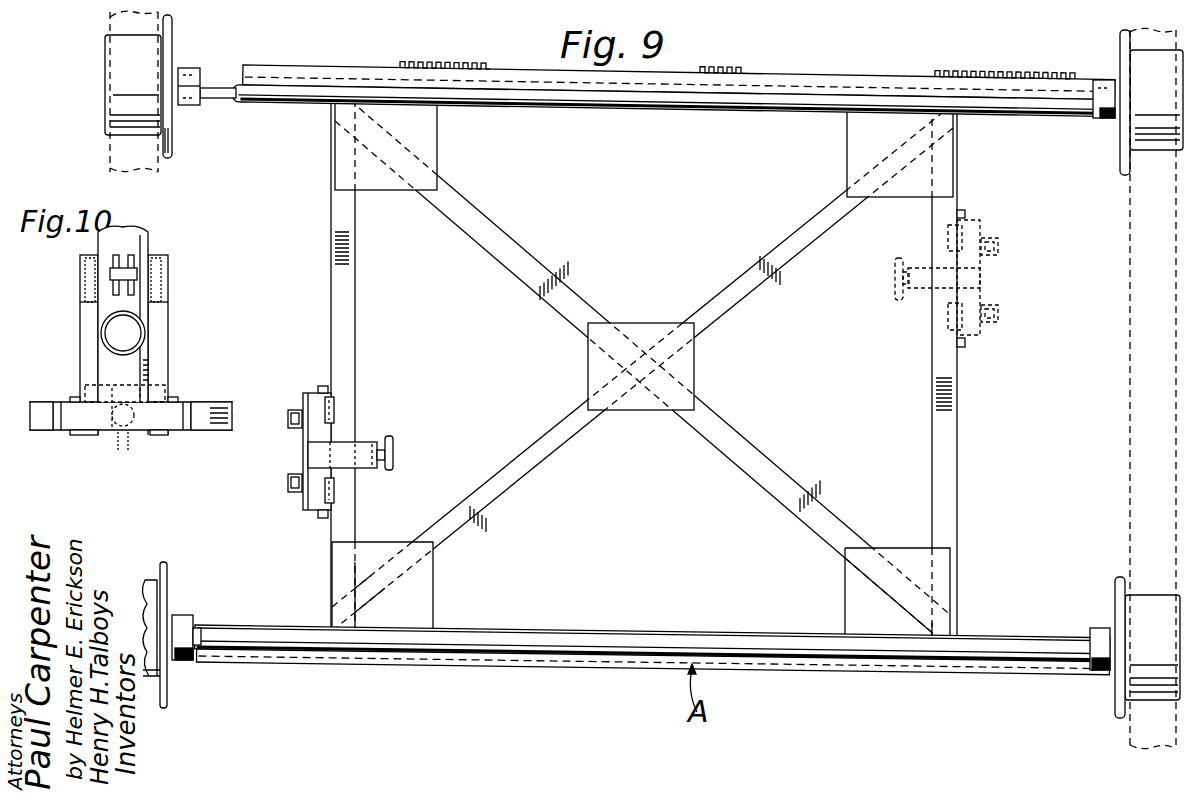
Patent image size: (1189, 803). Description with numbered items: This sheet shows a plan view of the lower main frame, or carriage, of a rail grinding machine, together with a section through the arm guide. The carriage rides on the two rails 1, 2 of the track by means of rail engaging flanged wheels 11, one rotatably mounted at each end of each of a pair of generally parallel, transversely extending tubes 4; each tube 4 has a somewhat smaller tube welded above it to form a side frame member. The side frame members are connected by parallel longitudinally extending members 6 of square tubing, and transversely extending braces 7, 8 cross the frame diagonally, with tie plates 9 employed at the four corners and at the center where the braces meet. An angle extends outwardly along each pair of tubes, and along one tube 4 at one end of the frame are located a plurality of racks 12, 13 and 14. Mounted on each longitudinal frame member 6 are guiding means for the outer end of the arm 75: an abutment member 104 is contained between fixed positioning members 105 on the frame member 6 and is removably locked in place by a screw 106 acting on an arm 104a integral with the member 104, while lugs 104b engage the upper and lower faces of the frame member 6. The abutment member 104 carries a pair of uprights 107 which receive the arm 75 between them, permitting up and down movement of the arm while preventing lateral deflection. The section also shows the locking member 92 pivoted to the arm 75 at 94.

In FIG. 9, the rail 1 is at (110, 16).
In FIG. 9, the rail 2 is at (1136, 301).
In FIG. 9, the transversely extending tube 4 is at (221, 99).
In FIG. 9, the longitudinally extending frame member 6 is at (348, 305).
In FIG. 10, the longitudinally extending frame member 6 is at (213, 432).
In FIG. 9, the transversely extending brace 7 is at (706, 300).
In FIG. 9, the transversely extending brace 8 is at (526, 268).
In FIG. 9, the tie plate 9 is at (426, 136).
In FIG. 9, the rail engaging flanged wheel 11 is at (120, 78).
In FIG. 9, the rack 12 is at (445, 66).
In FIG. 9, the rack 13 is at (722, 70).
In FIG. 9, the rack 14 is at (1005, 75).
In FIG. 10, the arm 75 is at (102, 331).
In FIG. 10, the locking member 92 is at (121, 270).
In FIG. 10, the pivot 94 is at (136, 272).
In FIG. 10, the abutment member 104 is at (70, 432).
In FIG. 10, the arm 104a is at (165, 387).
In FIG. 10, the lug 104b is at (74, 396).
In FIG. 10, the fixed positioning member 105 is at (58, 402).
In FIG. 10, the screw 106 is at (126, 438).
In FIG. 10, the upright 107 is at (85, 312).